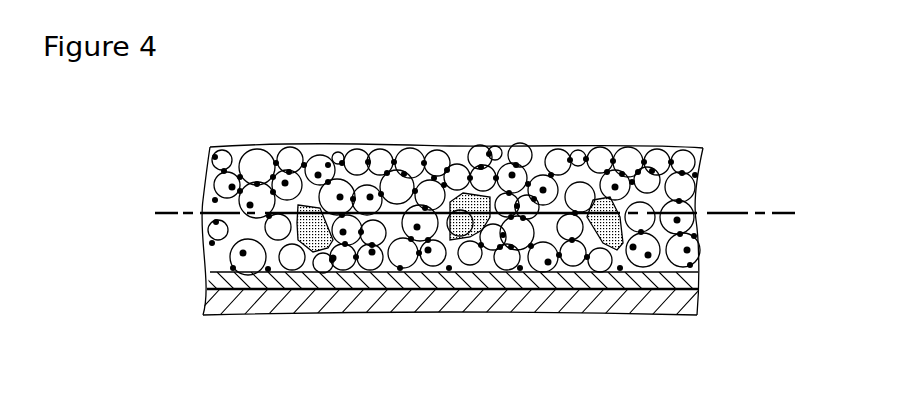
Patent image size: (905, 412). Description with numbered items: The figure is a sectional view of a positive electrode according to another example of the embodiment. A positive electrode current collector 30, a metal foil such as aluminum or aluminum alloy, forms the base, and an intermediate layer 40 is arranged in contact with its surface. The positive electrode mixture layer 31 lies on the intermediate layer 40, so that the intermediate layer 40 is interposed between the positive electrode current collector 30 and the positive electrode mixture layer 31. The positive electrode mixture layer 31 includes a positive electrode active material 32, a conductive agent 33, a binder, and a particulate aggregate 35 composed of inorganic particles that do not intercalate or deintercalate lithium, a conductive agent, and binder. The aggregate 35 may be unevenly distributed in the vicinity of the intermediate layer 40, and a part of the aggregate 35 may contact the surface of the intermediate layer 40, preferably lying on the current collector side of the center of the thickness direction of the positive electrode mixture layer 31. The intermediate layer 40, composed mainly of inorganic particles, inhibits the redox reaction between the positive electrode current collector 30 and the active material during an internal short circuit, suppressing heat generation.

The positive electrode current collector 30 is at (472, 311).
The positive electrode mixture layer 31 is at (704, 196).
The positive electrode active material 32 is at (498, 147).
The conductive agent 33 is at (380, 148).
The aggregate 35 is at (300, 147).
The intermediate layer 40 is at (702, 280).